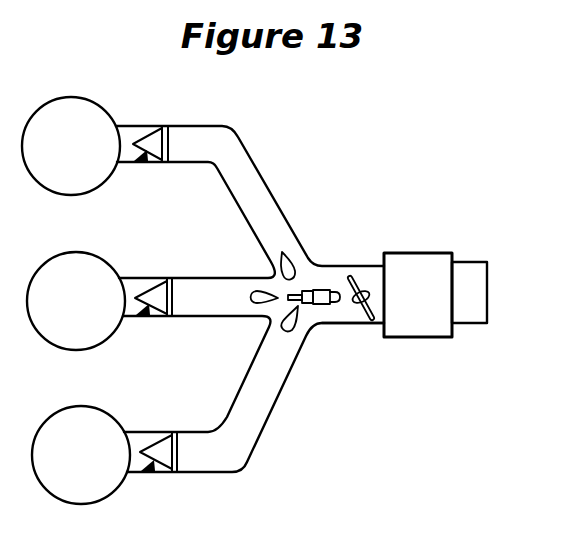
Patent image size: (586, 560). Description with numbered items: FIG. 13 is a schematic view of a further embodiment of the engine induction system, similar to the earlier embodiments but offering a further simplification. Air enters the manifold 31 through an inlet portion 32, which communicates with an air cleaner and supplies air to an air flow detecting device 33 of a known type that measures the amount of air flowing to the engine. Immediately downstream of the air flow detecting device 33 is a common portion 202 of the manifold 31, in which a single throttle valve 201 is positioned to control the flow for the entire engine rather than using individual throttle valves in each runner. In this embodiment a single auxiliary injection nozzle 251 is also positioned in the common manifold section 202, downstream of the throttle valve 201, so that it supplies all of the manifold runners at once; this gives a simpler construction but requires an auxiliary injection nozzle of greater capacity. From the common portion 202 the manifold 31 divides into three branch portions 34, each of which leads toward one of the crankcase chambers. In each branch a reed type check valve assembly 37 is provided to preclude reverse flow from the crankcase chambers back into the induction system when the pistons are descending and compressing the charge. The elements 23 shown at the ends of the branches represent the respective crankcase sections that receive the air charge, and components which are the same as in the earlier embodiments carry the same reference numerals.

The fluid source container 23 is at (33, 171).
The manifold 31 is at (334, 250).
The inlet portion 32 is at (470, 262).
The air flow detecting device 33 is at (425, 252).
The branch portions 34 is at (182, 164).
The reed type check valve assembly 37 is at (128, 163).
The throttle valve 201 is at (360, 323).
The common portion 202 is at (345, 323).
The auxiliary injection nozzle 251 is at (317, 304).